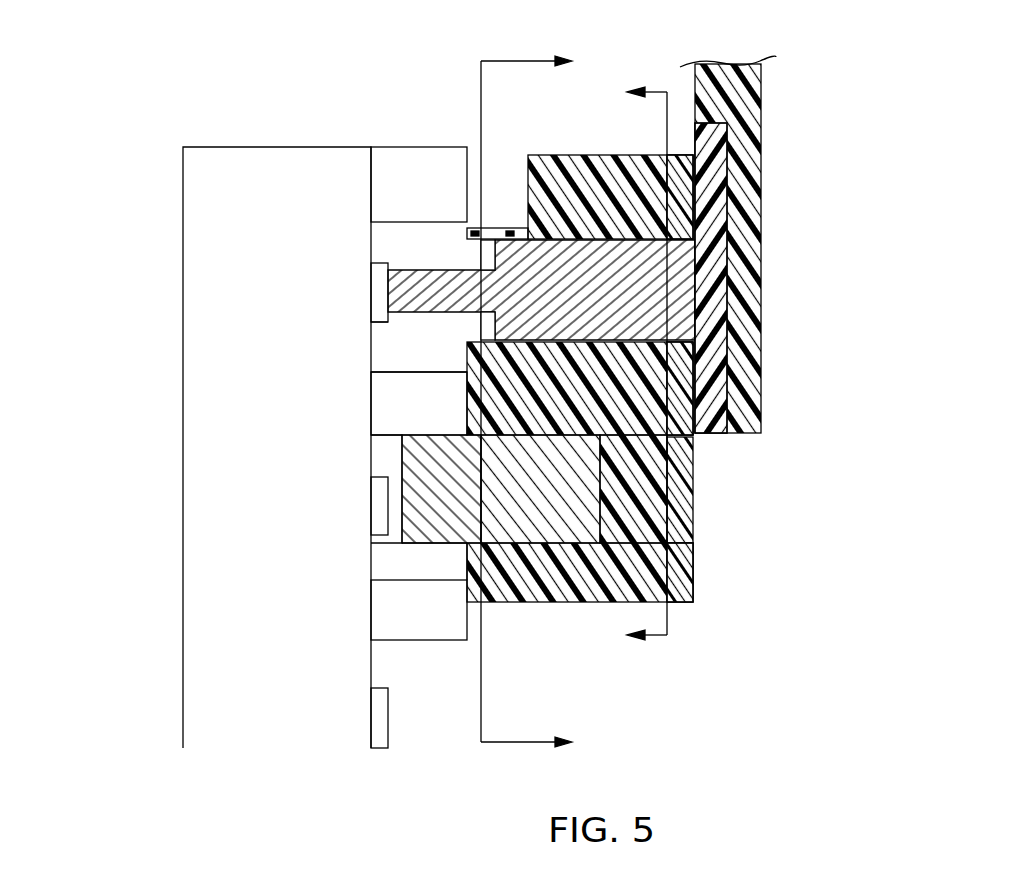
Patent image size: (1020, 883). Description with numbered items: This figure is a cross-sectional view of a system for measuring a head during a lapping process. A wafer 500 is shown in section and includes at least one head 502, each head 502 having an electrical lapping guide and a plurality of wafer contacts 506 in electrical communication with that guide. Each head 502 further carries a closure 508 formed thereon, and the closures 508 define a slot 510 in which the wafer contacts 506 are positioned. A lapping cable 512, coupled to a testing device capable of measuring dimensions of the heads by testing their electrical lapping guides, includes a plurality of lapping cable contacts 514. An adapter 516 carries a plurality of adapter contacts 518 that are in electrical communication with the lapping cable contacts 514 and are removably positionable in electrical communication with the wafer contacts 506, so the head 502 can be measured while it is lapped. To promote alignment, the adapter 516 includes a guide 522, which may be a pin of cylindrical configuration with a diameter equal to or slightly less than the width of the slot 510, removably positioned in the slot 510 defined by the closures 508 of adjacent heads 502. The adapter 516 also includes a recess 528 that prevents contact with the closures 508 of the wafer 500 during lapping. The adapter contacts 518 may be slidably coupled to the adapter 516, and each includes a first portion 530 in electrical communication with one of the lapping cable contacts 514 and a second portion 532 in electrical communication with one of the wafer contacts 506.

The wafer 500 is at (183, 181).
The head 502 is at (352, 118).
The wafer contacts 506 is at (382, 263).
The closure 508 is at (408, 170).
The slot 510 is at (380, 350).
The lapping cable 512 is at (752, 90).
The lapping cable contacts 514 is at (711, 221).
The adapter 516 is at (683, 602).
The adapter contacts 518 is at (597, 202).
The guide 522 is at (443, 512).
The recess 528 is at (510, 170).
The first portion 530 is at (630, 327).
The second portion 532 is at (428, 312).